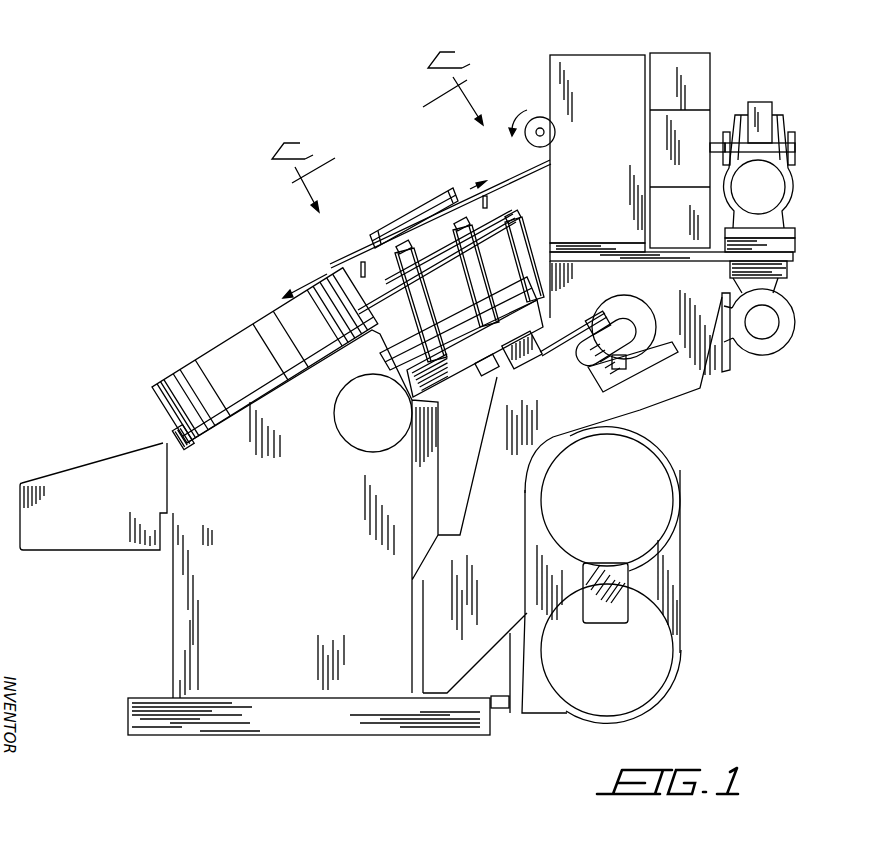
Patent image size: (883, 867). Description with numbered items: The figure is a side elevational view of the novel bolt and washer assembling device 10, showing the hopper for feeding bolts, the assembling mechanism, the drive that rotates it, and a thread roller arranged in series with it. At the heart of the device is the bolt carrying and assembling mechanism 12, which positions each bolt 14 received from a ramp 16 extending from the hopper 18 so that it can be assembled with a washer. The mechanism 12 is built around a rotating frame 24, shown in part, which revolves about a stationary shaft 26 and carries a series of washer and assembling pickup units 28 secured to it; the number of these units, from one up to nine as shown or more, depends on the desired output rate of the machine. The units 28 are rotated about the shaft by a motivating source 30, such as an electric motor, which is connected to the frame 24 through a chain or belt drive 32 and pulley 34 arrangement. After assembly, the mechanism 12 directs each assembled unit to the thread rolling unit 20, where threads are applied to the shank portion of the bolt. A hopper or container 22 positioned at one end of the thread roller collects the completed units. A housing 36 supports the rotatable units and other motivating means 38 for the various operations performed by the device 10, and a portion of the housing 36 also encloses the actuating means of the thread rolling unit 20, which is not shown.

The bolt and washer assembling device 10 is at (195, 265).
The bolt carrying and assembling mechanism 12 is at (385, 222).
The bolt 14 is at (490, 204).
The ramp 16 is at (549, 170).
The hopper 18 is at (603, 63).
The thread rolling unit 20 is at (192, 372).
The hopper or container 22 is at (100, 473).
The rotating frame 24 is at (452, 367).
The stationary shaft 26 is at (417, 270).
The washer and assembling pickup units 28 is at (397, 343).
The motivating source 30 is at (637, 307).
The chain or belt drive 32 is at (530, 362).
The pulley 34 is at (492, 373).
The housing 36 is at (578, 480).
The motivating means 38 is at (773, 197).